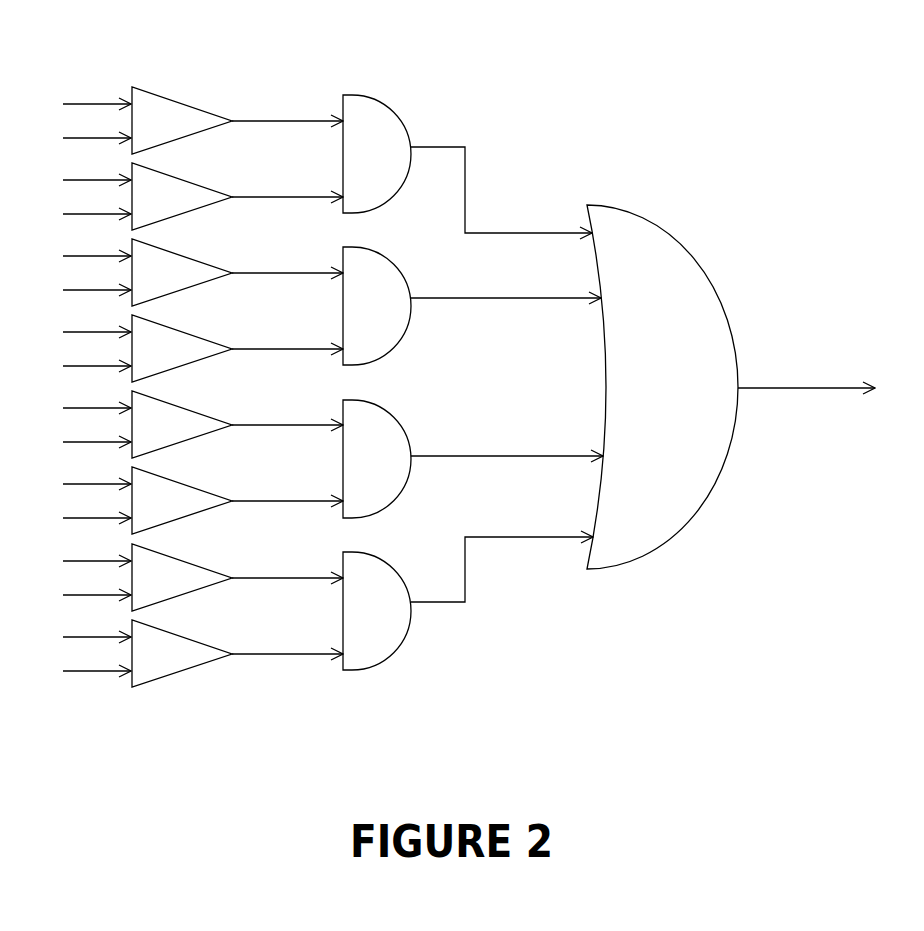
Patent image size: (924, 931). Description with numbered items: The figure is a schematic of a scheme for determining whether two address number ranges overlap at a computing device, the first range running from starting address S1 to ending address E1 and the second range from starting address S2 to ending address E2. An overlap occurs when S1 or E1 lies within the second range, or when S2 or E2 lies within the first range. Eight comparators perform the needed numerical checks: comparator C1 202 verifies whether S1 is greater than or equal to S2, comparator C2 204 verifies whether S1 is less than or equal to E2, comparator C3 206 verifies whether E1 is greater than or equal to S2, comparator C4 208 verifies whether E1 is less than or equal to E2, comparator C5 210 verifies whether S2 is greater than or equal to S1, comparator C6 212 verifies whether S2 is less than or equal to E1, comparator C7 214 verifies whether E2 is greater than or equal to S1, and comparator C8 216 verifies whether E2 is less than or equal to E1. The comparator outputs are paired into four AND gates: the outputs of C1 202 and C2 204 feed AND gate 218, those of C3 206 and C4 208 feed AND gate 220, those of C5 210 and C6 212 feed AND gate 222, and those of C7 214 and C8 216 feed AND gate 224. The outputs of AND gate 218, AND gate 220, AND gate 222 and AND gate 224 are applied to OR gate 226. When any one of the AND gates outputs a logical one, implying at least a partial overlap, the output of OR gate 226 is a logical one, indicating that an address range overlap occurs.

The comparator C1 202 is at (190, 116).
The comparator C2 204 is at (190, 192).
The comparator C3 206 is at (190, 268).
The comparator C4 208 is at (190, 344).
The comparator C5 210 is at (190, 420).
The comparator C6 212 is at (190, 496).
The comparator C7 214 is at (190, 573).
The comparator C8 216 is at (190, 649).
The AND gate 218 is at (467, 164).
The AND gate 220 is at (472, 306).
The AND gate 222 is at (473, 459).
The AND gate 224 is at (468, 603).
The OR gate 226 is at (745, 387).